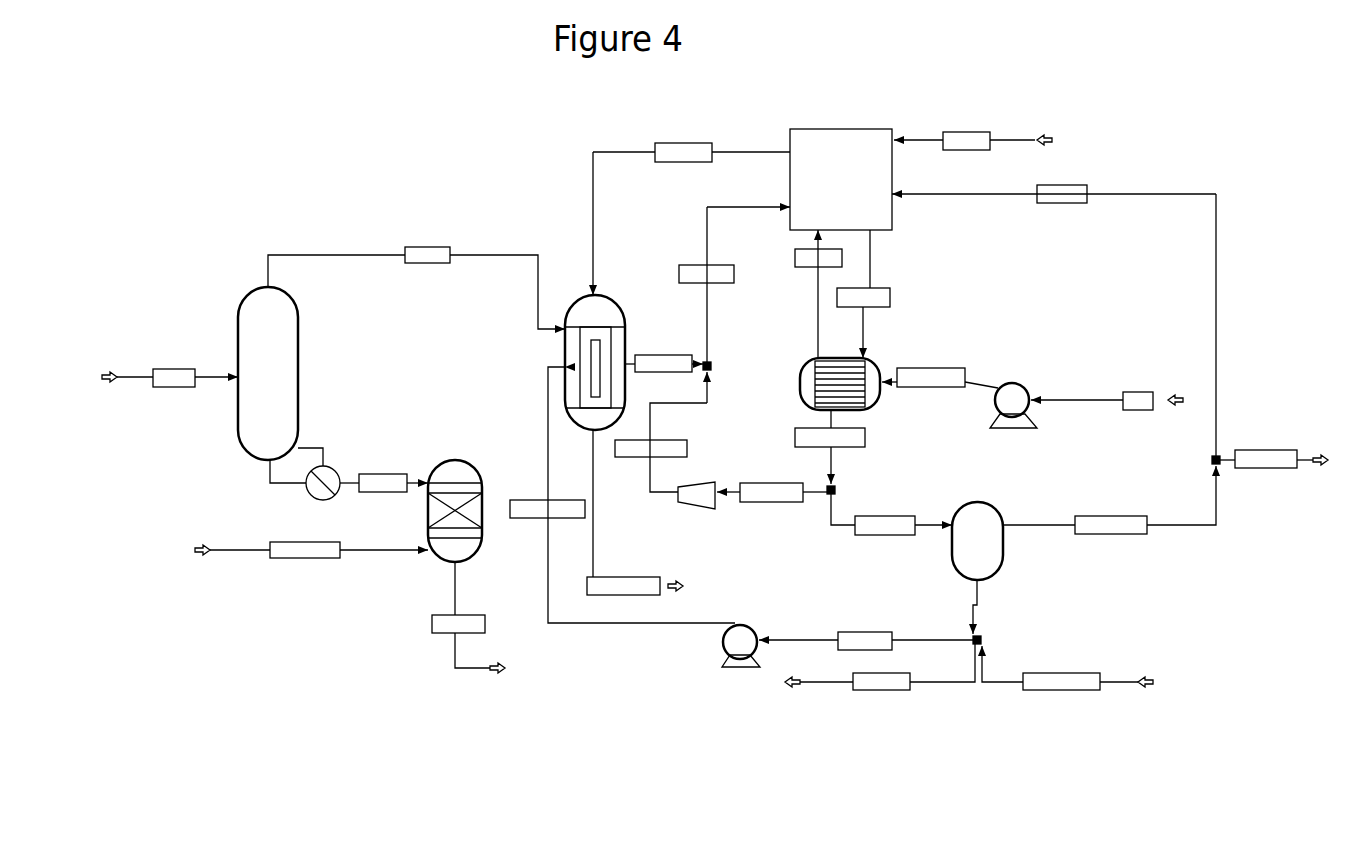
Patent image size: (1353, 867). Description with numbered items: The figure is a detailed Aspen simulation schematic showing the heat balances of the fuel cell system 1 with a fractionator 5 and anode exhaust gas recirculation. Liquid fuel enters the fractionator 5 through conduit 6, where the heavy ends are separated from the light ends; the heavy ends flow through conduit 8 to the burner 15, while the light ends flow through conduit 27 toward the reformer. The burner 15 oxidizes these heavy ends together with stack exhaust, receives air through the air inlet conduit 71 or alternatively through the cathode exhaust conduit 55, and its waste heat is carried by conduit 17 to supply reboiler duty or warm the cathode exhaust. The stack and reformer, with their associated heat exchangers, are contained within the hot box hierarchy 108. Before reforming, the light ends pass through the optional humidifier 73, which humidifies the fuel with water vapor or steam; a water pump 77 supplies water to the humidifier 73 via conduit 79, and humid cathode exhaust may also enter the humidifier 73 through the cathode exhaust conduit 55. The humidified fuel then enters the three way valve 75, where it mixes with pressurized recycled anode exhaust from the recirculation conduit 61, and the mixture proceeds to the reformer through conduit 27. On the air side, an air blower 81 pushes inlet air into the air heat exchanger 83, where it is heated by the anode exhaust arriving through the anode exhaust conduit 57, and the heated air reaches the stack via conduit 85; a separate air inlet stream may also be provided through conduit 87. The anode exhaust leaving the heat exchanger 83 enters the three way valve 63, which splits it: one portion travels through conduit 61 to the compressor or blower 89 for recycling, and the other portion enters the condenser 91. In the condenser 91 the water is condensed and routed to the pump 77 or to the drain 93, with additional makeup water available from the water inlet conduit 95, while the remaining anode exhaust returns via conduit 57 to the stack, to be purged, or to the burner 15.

The system 1 is at (297, 134).
The fractionator 5 is at (300, 358).
The conduit 6 is at (148, 370).
The conduit 8 is at (367, 472).
The burner 15 is at (482, 482).
The conduit 17 is at (453, 656).
The conduit 27 is at (478, 248).
The cathode exhaust conduit 55 is at (732, 153).
The anode exhaust conduit 57 is at (877, 262).
The recirculation conduit 61 is at (645, 429).
The three way valve 63 is at (839, 490).
The air inlet conduit 71 is at (368, 550).
The humidifier 73 is at (563, 345).
The three way valve 75 is at (712, 368).
The water pump 77 is at (720, 666).
The conduit 79 is at (598, 622).
The air blower 81 is at (1025, 392).
The air heat exchanger 83 is at (863, 405).
The conduit 85 is at (818, 309).
The conduit 87 is at (1012, 142).
The compressor or blower 89 is at (675, 503).
The condenser 91 is at (1003, 560).
The drain 93 is at (940, 682).
The water inlet conduit 95 is at (1122, 682).
The hot box hierarchy 108 is at (817, 128).